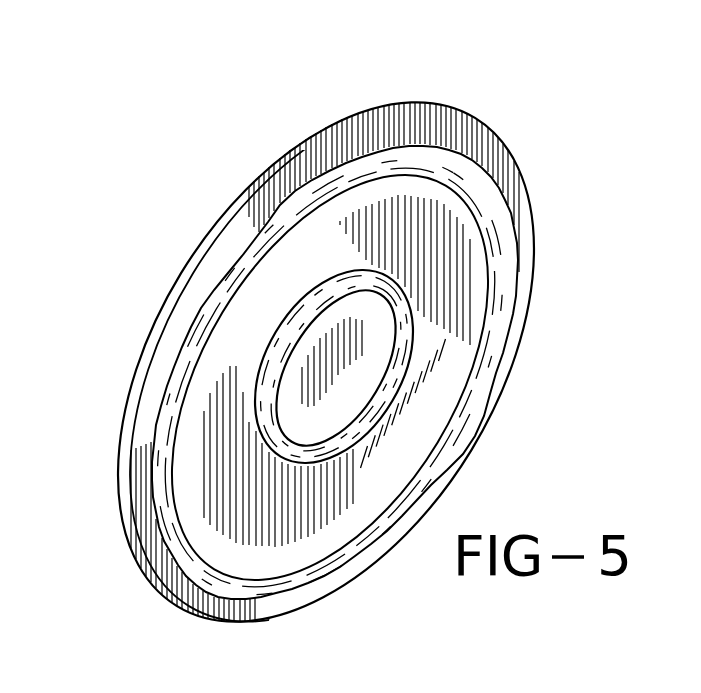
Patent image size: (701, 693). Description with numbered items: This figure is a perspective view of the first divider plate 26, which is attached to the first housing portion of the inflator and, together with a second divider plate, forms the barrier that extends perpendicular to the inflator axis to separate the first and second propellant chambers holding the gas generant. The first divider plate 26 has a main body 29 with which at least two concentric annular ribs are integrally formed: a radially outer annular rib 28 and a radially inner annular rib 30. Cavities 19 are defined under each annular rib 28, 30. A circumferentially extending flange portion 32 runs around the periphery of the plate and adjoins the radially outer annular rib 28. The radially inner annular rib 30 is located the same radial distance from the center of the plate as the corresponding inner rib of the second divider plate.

The cavities 19 is at (218, 460).
The first divider plate 26 is at (190, 258).
The radially outer annular rib 28 is at (458, 430).
The main body 29 is at (435, 240).
The radially inner annular rib 30 is at (263, 383).
The circumferentially extending flange portion 32 is at (360, 131).